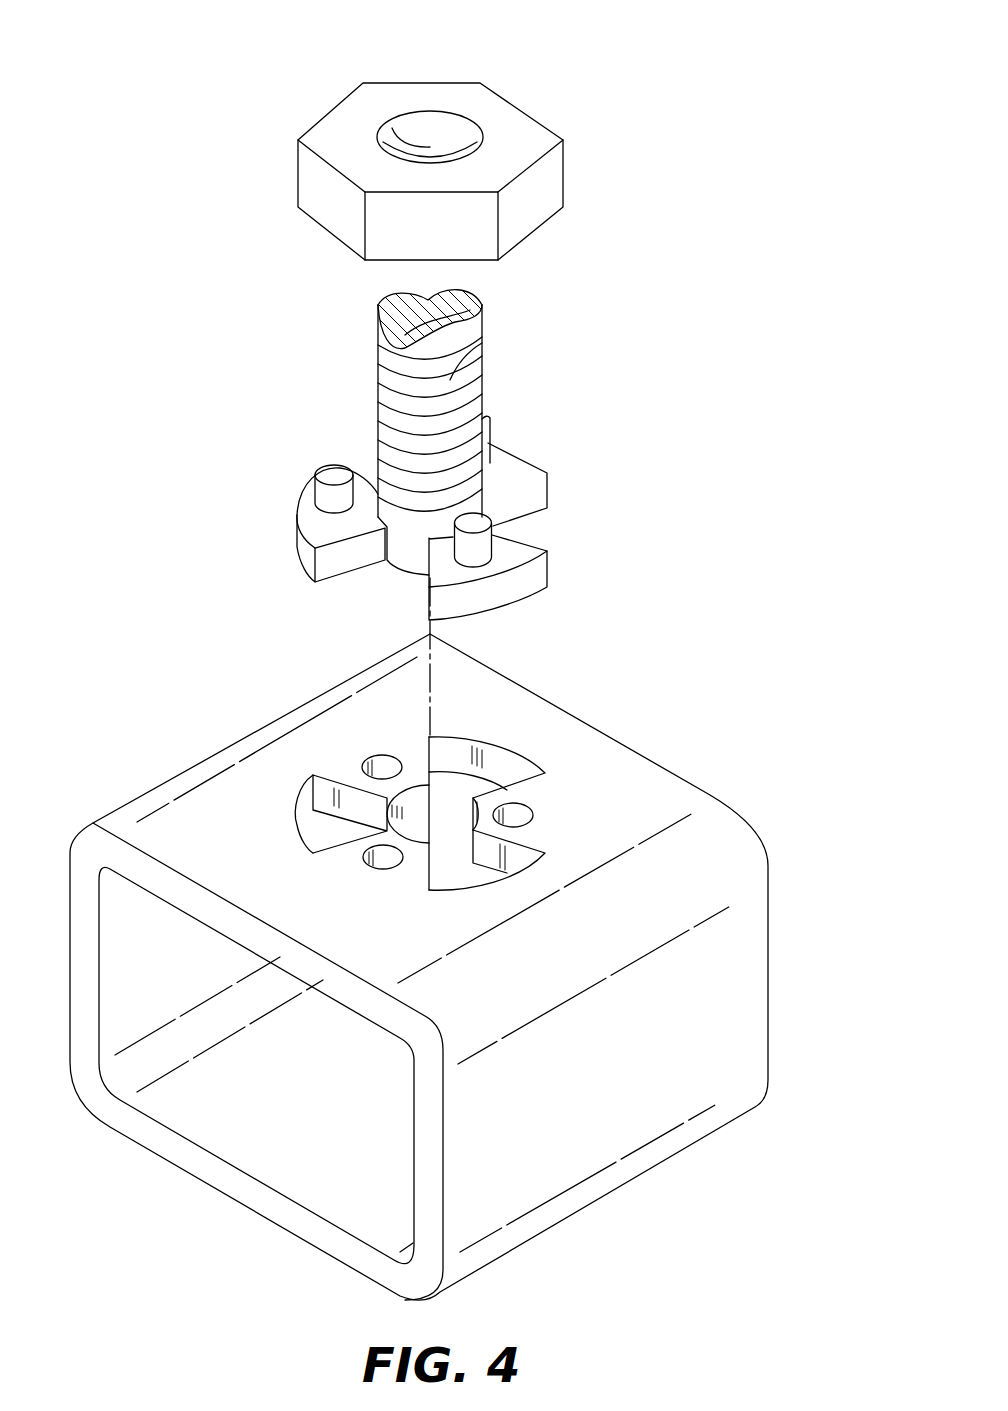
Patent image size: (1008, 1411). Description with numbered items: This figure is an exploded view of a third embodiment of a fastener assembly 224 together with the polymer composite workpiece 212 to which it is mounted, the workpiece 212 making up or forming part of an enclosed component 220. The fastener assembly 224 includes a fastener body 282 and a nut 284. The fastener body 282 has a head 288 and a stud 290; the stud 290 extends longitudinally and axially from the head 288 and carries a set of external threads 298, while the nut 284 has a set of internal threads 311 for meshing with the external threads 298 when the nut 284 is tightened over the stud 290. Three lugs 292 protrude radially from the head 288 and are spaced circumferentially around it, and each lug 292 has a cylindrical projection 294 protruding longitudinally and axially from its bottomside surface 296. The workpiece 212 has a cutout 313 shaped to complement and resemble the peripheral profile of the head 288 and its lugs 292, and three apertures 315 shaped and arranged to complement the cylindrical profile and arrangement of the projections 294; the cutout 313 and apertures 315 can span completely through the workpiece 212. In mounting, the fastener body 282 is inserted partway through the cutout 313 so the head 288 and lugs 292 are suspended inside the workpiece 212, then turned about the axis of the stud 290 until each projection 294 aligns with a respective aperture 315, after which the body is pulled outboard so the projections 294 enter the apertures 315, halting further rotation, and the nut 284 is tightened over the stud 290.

The polymer composite workpiece 212 is at (654, 776).
The enclosed component 220 is at (768, 991).
The fastener assembly 224 is at (628, 306).
The fastener body 282 is at (485, 373).
The nut 284 is at (563, 167).
The head 288 is at (431, 509).
The stud 290 is at (370, 372).
The lug 292 is at (312, 522).
The projection 294 is at (327, 492).
The bottomside surface 296 is at (302, 516).
The set of external threads 298 is at (482, 343).
The set of internal threads 311 is at (430, 148).
The cutout 313 is at (492, 764).
The aperture 315 is at (383, 772).